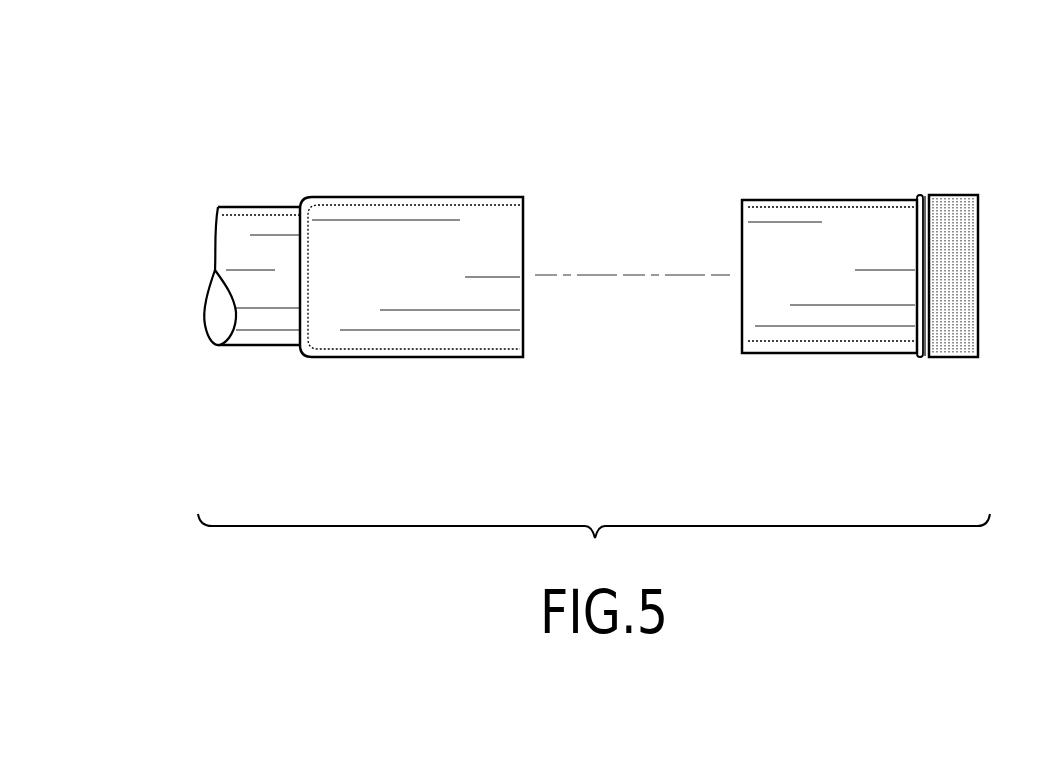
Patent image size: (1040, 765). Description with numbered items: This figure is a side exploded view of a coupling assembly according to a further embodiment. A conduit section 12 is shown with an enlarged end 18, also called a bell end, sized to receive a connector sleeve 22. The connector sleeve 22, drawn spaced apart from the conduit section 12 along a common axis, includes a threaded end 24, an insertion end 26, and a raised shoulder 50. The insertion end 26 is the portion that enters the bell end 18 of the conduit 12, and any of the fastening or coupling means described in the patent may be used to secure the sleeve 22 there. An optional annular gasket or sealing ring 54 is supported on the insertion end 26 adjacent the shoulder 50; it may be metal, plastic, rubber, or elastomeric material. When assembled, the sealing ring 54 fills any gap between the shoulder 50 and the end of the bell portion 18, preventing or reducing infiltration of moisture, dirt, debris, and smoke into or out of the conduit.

The conduit section 12 is at (258, 206).
The enlarged end 18 is at (436, 362).
The connector sleeve 22 is at (846, 253).
The threaded end 24 is at (950, 195).
The insertion end 26 is at (768, 354).
The raised shoulder 50 is at (927, 357).
The sealing ring 54 is at (919, 357).